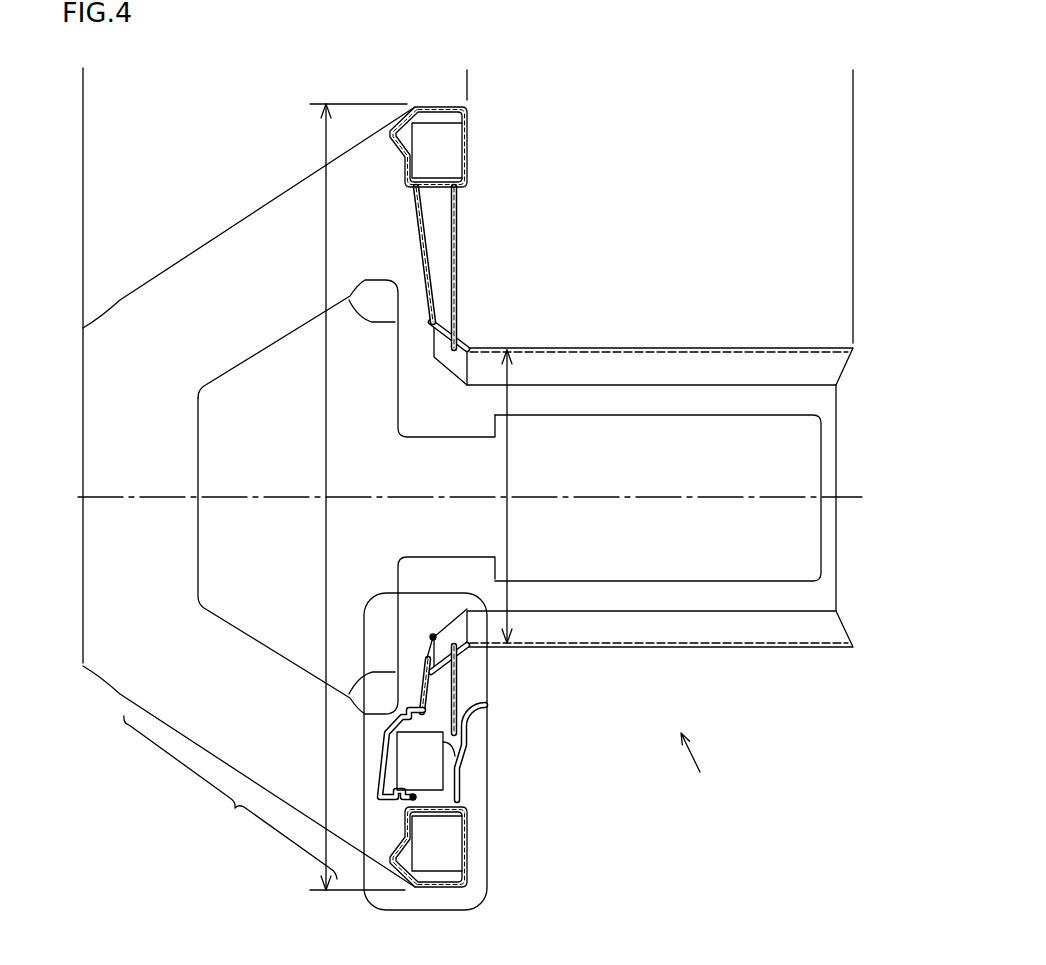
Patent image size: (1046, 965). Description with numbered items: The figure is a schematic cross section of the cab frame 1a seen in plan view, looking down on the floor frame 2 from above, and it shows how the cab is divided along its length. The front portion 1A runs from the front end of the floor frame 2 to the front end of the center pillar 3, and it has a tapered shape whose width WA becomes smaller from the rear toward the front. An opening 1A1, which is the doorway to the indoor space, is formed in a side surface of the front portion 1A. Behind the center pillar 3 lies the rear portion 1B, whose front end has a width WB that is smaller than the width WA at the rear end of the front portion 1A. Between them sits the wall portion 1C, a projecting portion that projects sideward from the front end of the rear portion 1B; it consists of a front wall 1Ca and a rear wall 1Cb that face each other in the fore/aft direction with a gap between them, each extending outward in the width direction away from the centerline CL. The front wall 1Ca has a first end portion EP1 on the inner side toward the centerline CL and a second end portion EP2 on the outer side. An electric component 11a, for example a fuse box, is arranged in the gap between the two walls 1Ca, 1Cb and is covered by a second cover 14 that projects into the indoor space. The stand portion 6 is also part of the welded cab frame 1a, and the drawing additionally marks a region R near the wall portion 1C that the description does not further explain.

The front portion 1A is at (412, 79).
The opening 1A1 is at (230, 797).
The rear portion 1B is at (848, 79).
The wall portion 1C is at (460, 79).
The front wall 1Ca is at (465, 727).
The rear wall 1Cb is at (433, 708).
The cab frame 1a is at (722, 799).
The floor frame 2 is at (237, 713).
The center pillar 3 is at (447, 875).
The stand portion 6 is at (457, 265).
The electric component 11a is at (425, 772).
The second cover 14 is at (405, 817).
The first end portion EP1 is at (433, 637).
The second end portion EP2 is at (413, 797).
The region R is at (487, 752).
The width of front portion WA is at (346, 497).
The width of rear portion front end WB is at (524, 496).
The centerline CL is at (470, 486).